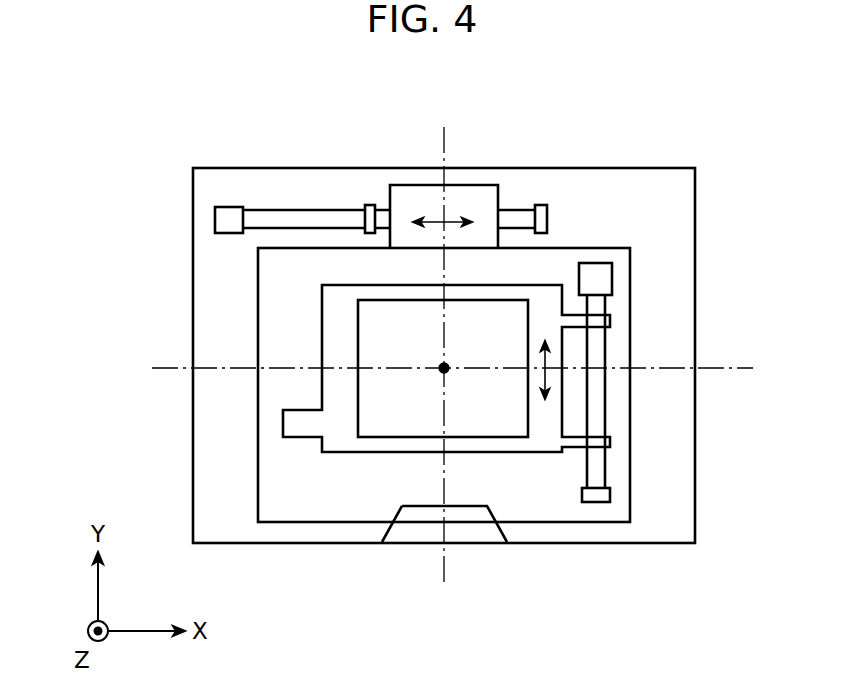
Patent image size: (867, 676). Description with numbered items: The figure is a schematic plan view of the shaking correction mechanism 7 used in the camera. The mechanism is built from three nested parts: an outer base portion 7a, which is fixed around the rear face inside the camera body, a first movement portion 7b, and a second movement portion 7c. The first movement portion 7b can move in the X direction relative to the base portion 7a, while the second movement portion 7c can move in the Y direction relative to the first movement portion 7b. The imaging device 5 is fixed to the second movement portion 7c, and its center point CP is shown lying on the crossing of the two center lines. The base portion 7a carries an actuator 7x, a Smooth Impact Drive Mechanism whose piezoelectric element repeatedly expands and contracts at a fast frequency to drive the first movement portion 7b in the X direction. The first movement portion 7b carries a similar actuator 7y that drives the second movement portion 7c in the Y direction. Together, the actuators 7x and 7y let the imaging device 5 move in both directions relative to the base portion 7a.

The shaking correction mechanism 7 is at (638, 108).
The base portion 7a is at (510, 168).
The first movement portion 7b is at (602, 248).
The second movement portion 7c is at (322, 350).
The actuator 7x is at (310, 210).
The actuator 7y is at (605, 405).
The imaging device 5 is at (368, 437).
The center point CP is at (444, 368).